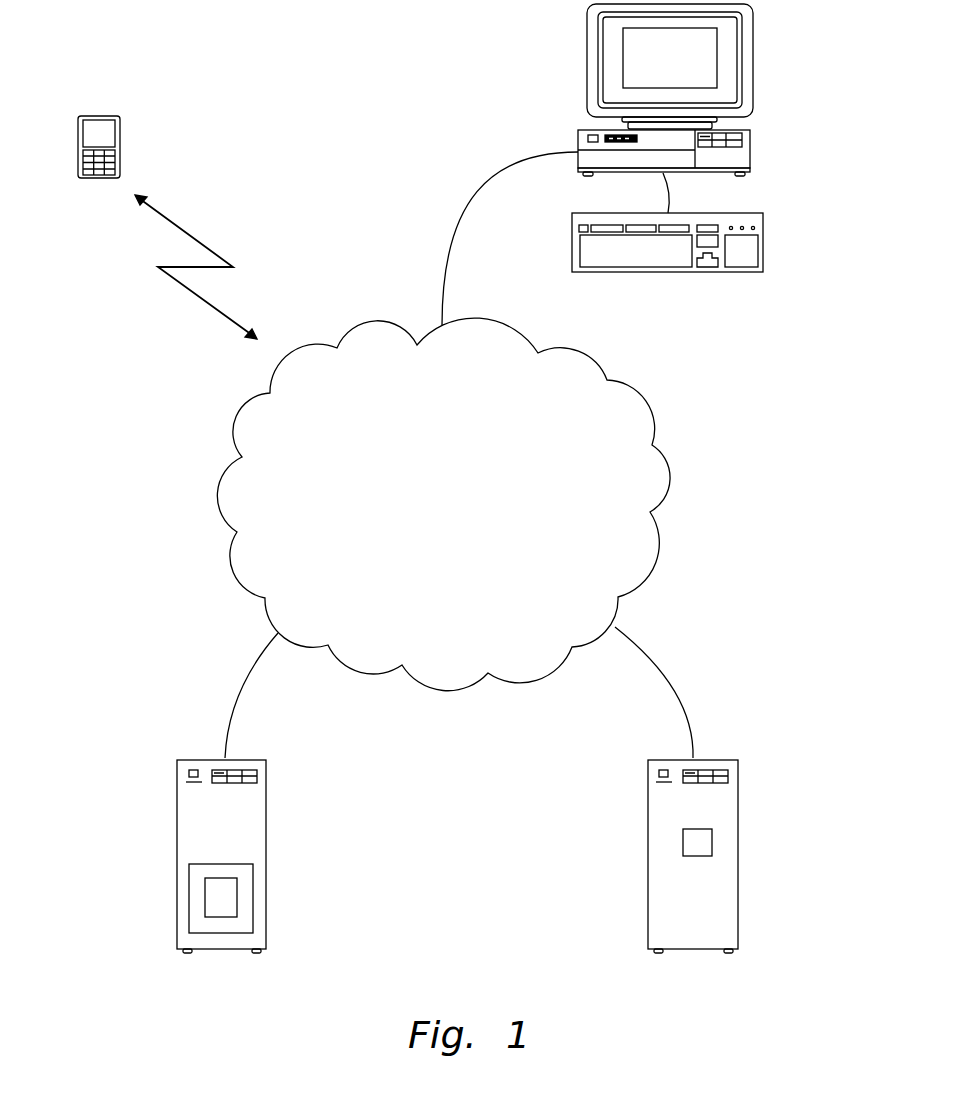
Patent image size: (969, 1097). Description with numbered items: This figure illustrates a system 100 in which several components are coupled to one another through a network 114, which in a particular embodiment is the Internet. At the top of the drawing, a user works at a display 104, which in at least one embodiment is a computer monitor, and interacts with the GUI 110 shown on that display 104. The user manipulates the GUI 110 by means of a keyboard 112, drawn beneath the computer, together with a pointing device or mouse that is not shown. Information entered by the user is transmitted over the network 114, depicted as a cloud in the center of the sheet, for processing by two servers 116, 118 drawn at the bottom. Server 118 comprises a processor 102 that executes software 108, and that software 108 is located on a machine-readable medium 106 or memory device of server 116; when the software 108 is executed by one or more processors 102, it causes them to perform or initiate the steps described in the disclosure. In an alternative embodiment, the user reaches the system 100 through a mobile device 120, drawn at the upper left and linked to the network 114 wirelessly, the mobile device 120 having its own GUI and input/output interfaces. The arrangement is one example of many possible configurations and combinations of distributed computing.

The system 100 is at (236, 37).
The processor 102 is at (712, 844).
The display 104 is at (672, 90).
The machine-readable medium 106 is at (254, 874).
The software 108 is at (237, 906).
The GUI 110 is at (623, 66).
The keyboard 112 is at (763, 247).
The network 114 is at (218, 495).
The server 116 is at (254, 856).
The server 118 is at (724, 856).
The mobile device 120 is at (102, 115).